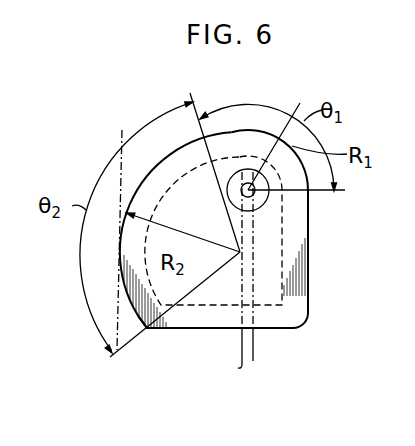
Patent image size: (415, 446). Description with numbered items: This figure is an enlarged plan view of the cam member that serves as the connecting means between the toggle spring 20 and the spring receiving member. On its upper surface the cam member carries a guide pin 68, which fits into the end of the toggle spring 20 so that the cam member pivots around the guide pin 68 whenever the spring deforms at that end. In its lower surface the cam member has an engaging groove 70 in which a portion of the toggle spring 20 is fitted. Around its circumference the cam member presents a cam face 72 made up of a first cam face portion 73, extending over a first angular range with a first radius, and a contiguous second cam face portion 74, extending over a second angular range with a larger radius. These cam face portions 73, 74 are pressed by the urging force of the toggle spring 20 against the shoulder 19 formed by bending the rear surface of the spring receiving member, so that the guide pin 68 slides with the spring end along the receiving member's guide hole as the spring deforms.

The shoulder 19 is at (122, 130).
The toggle spring 20 is at (250, 362).
The guide pin 68 is at (262, 197).
The engaging groove 70 is at (253, 328).
The cam face 72 is at (136, 330).
The first cam face portion 73 is at (233, 132).
The second cam face portion 74 is at (168, 157).